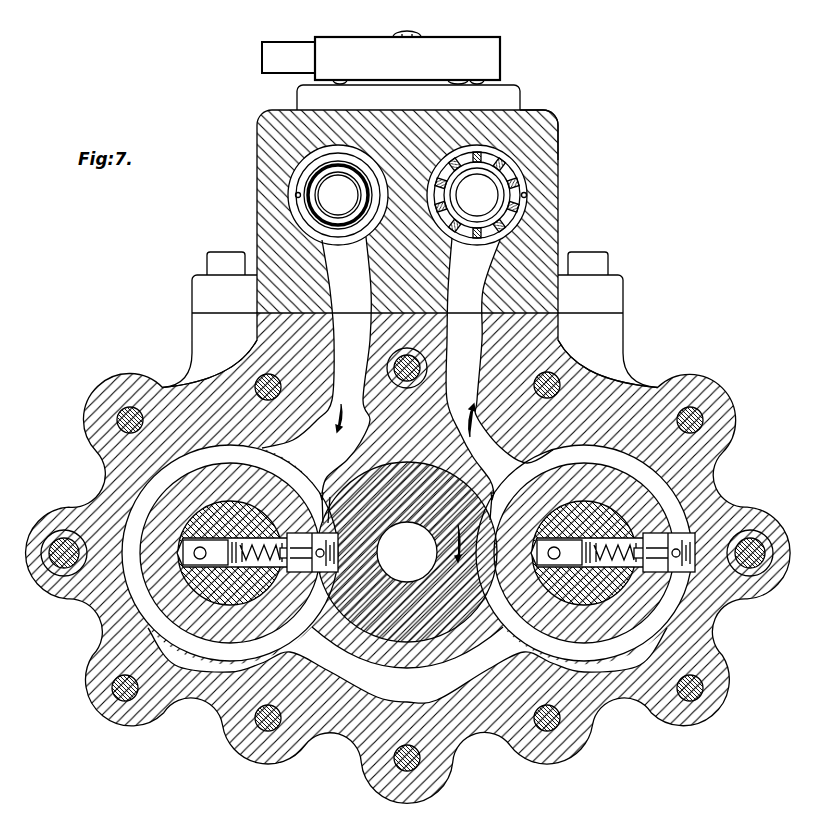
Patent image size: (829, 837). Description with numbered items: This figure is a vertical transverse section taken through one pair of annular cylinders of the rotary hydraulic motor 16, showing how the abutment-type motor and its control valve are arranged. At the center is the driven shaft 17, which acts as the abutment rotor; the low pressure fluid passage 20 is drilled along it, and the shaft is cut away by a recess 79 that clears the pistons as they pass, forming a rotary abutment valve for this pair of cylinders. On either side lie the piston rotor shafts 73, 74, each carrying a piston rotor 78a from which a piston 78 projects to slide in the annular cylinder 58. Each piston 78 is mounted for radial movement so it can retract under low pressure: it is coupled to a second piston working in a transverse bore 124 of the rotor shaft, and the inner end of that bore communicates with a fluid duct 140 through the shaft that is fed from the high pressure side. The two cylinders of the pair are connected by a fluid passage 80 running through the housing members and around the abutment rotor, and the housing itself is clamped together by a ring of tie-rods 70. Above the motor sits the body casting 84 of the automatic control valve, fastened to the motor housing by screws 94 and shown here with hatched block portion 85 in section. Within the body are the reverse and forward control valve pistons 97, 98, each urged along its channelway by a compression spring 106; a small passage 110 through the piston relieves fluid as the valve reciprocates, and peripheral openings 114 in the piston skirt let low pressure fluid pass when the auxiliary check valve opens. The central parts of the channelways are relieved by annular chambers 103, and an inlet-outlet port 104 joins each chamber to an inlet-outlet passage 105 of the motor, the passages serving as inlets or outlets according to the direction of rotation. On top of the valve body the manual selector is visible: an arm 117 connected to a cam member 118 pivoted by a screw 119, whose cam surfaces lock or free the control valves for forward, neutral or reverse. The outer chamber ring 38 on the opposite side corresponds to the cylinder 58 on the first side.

The rotary hydraulic motor 16 is at (80, 439).
The driven shaft 17 is at (450, 620).
The fluid passage 20 is at (407, 575).
The right gear chamber 38 is at (660, 487).
The annular cylinder 58 is at (140, 508).
The tie-rods 70 is at (120, 700).
The piston rotor shaft 73 is at (230, 510).
The piston rotor shaft 74 is at (578, 510).
The piston 78 is at (323, 576).
The piston rotor 78a is at (203, 630).
The recess 79 is at (314, 500).
The fluid passage 80 is at (363, 680).
The body casting 84 is at (557, 125).
The housing upper block 85 is at (253, 124).
The screws 94 is at (217, 263).
The valve piston 97 is at (305, 172).
The valve piston 98 is at (520, 170).
The annular chamber 103 is at (297, 195).
The inlet-outlet port 104 is at (346, 287).
The inlet-outlet passage 105 is at (350, 330).
The compression spring 106 is at (312, 210).
The small passage 110 is at (443, 133).
The peripheral openings 114 is at (512, 157).
The arm 117 is at (274, 54).
The cam member 118 is at (487, 52).
The screw 119 is at (412, 33).
The transverse bore 124 is at (200, 540).
The fluid duct 140 is at (548, 490).